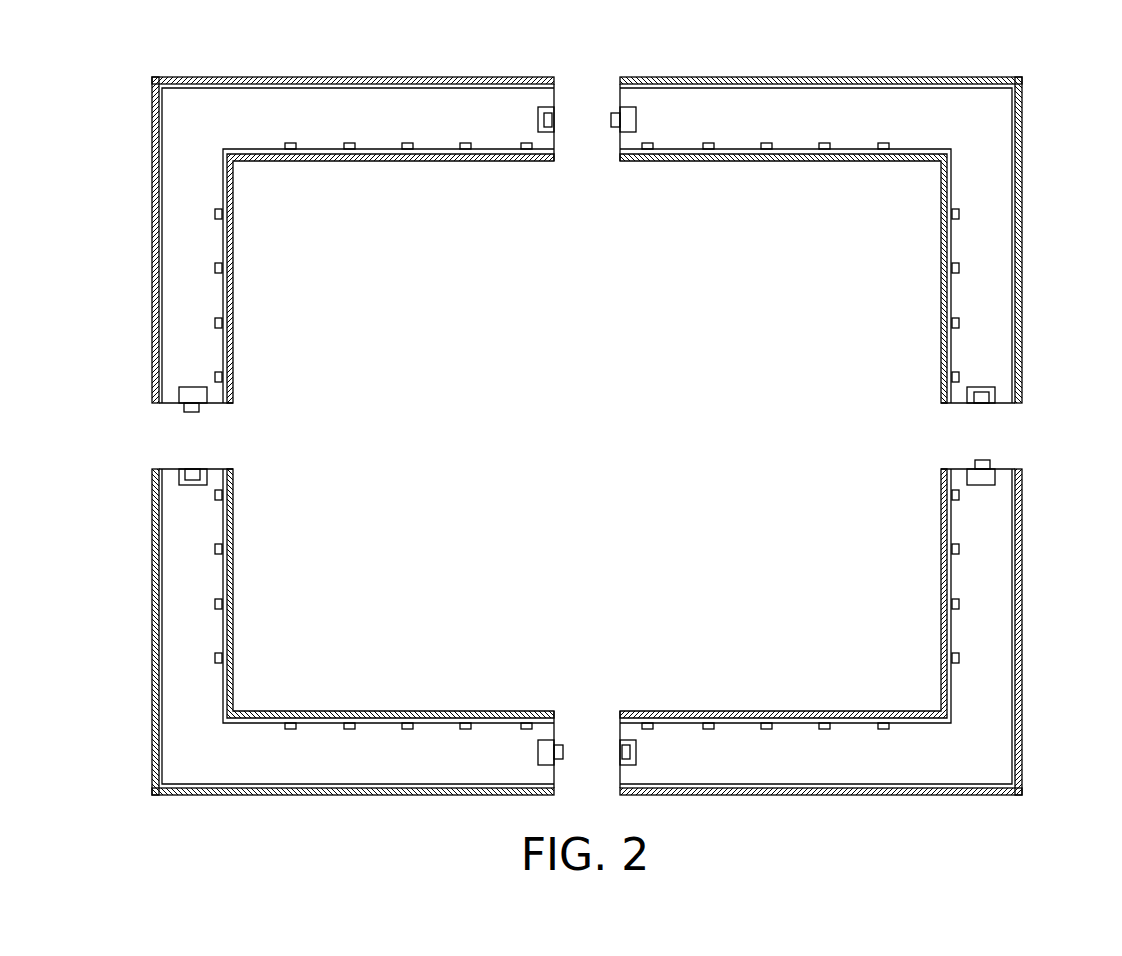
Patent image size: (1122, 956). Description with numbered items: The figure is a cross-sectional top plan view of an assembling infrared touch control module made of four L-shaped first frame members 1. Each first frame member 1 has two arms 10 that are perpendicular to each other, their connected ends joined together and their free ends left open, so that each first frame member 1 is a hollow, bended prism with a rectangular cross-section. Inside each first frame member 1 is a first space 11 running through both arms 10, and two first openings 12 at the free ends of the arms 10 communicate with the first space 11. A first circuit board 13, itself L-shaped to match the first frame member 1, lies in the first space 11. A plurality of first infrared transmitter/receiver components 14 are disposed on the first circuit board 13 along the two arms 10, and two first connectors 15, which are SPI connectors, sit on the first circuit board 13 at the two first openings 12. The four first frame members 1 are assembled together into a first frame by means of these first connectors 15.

The first frame member 1 is at (586, 436).
The arm 10 is at (587, 436).
The first space 11 is at (587, 436).
The first opening 12 is at (587, 436).
The first circuit board 13 is at (587, 436).
The first infrared transmitter/receiver component 14 is at (587, 436).
The first connector 15 is at (587, 436).